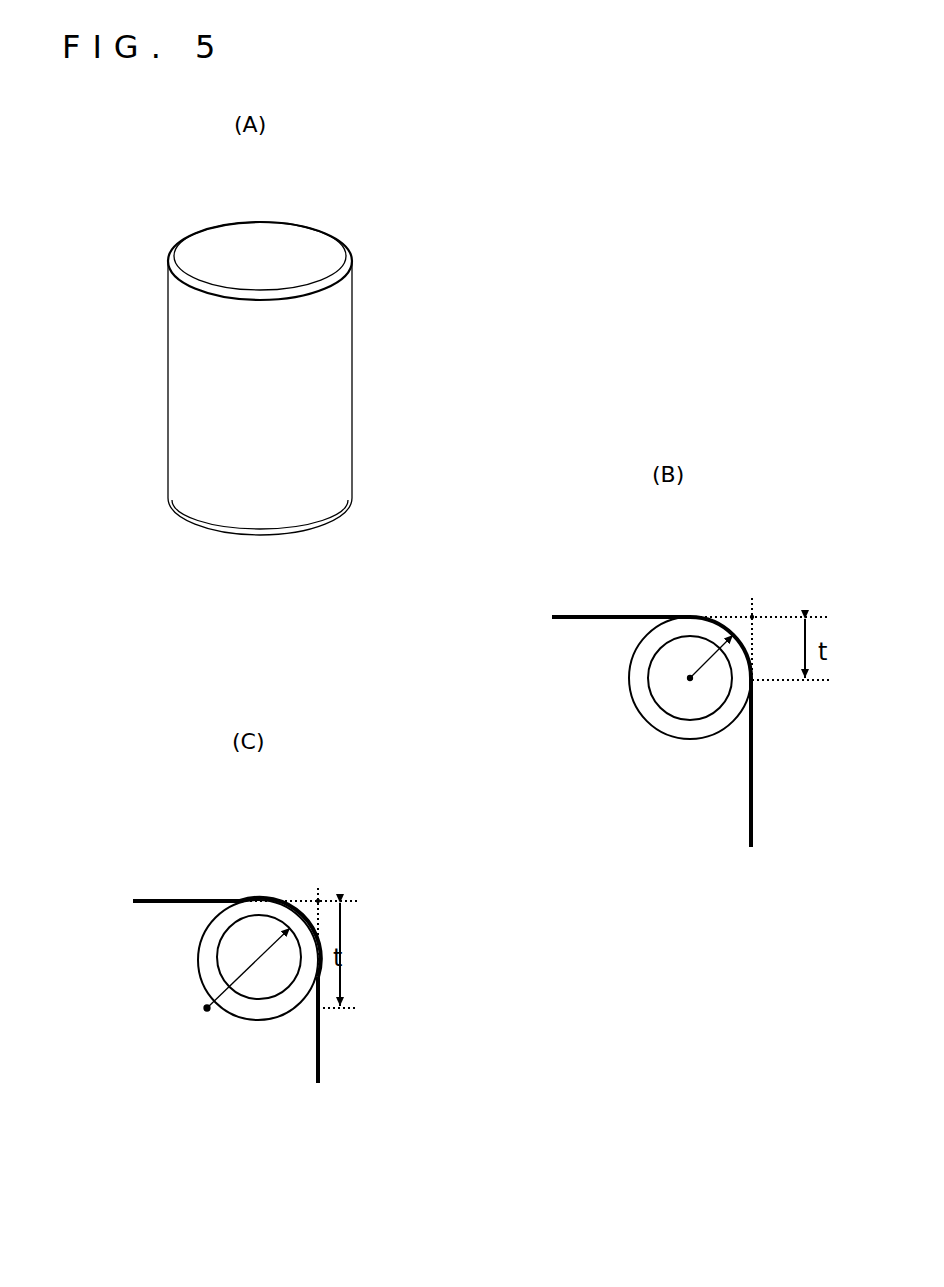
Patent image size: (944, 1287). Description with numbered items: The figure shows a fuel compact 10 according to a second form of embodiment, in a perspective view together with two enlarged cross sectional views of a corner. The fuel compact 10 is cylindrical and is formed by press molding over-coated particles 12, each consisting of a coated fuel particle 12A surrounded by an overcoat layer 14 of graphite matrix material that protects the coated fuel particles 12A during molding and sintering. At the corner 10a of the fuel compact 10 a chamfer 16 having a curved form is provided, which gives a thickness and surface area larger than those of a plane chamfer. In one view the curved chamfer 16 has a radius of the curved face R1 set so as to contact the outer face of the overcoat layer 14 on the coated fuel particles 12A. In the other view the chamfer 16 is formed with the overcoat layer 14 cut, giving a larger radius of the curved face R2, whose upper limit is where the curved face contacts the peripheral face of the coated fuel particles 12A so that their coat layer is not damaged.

The fuel compact 10 is at (343, 232).
The corner 10a is at (752, 617).
The over-coated particles 12 is at (629, 696).
The coated fuel particles 12A is at (688, 705).
The overcoat layer 14 is at (732, 705).
The chamfer 16 is at (183, 240).
The radius of the curved face R1 is at (704, 658).
The radius of the curved face R2 is at (258, 960).